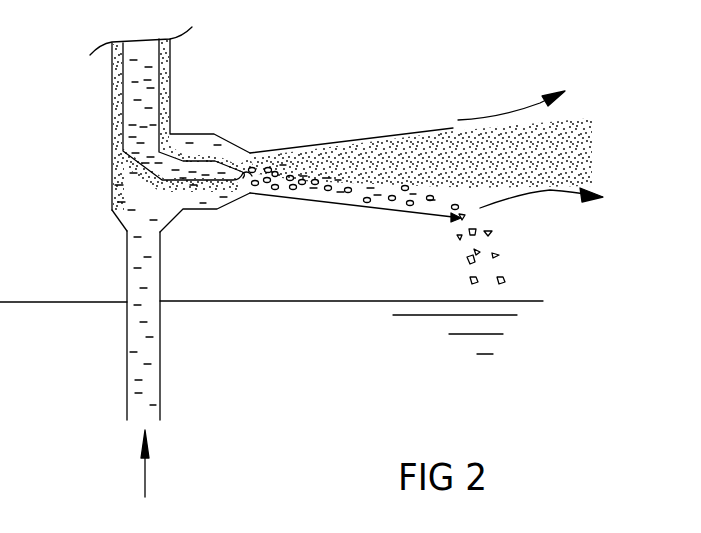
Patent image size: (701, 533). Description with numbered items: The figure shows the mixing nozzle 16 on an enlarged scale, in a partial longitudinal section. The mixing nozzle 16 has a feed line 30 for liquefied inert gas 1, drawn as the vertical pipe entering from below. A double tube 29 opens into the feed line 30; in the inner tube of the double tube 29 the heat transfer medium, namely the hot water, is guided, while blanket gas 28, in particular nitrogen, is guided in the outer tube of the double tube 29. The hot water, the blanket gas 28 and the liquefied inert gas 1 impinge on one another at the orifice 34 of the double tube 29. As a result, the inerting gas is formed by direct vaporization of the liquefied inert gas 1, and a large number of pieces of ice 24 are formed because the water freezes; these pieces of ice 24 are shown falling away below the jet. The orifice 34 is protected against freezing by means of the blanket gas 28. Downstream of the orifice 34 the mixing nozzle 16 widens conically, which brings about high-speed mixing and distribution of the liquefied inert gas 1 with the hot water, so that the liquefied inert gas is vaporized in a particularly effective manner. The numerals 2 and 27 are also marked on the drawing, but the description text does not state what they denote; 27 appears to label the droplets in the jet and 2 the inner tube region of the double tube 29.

The liquefied inert gas 1 is at (568, 140).
The inner liquid pipe 2 is at (137, 88).
The mixing nozzle 16 is at (110, 172).
The pieces of ice 24 is at (497, 255).
The liquid droplets 27 is at (275, 172).
The blanket gas 28 is at (165, 110).
The double tube 29 is at (110, 128).
The feed line 30 is at (127, 277).
The orifice 34 is at (241, 176).